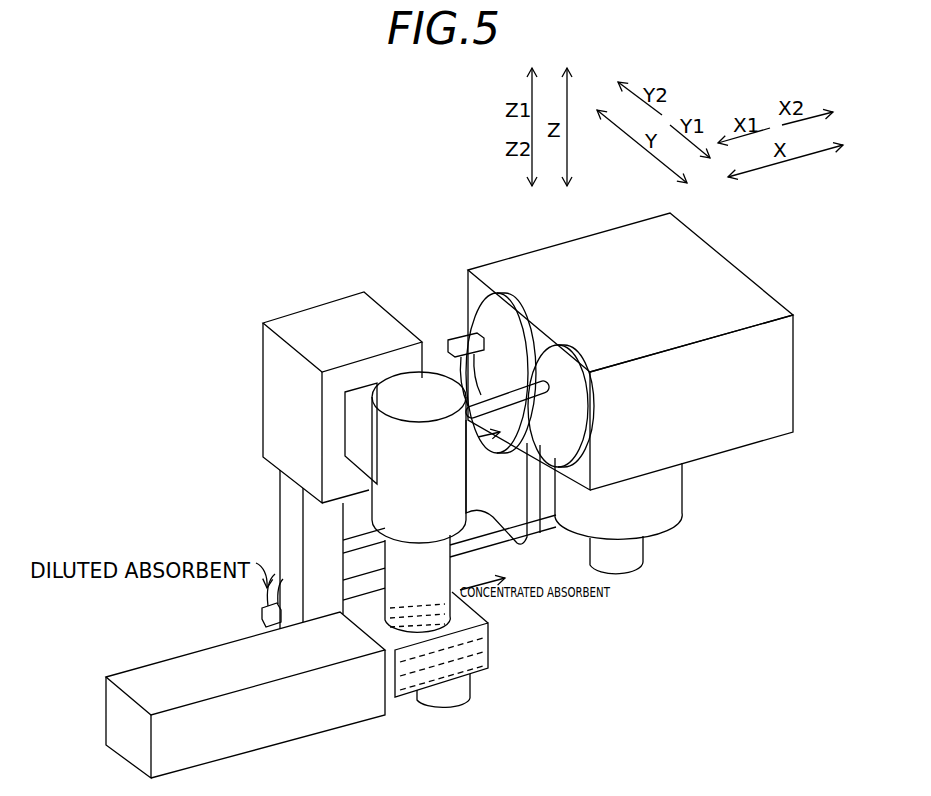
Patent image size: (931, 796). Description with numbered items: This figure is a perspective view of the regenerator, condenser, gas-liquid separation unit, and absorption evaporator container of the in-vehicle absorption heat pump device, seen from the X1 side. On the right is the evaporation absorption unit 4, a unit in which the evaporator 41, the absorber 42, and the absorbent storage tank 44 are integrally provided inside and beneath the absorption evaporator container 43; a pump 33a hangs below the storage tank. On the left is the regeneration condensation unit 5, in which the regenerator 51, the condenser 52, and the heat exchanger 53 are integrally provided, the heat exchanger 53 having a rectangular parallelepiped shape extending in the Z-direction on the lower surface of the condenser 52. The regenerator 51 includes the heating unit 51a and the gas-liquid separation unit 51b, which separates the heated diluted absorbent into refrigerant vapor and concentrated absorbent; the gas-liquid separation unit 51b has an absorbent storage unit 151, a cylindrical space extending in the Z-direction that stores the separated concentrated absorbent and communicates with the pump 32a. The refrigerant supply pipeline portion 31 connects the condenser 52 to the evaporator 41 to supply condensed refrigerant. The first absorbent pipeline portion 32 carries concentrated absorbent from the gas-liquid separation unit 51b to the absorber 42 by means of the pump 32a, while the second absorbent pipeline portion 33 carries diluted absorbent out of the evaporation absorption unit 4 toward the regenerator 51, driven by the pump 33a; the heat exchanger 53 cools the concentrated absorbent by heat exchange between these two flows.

The evaporation absorption unit 4 is at (754, 262).
The evaporator 41 is at (553, 357).
The absorber 42 is at (490, 312).
The absorption evaporator container 43 is at (796, 391).
The absorbent storage tank 44 is at (683, 498).
The regeneration condensation unit 5 is at (266, 300).
The condenser 52 is at (270, 389).
The heat exchanger 53 is at (282, 526).
The refrigerant supply pipeline portion 31 is at (467, 431).
The first absorbent pipeline portion 32 is at (512, 550).
The pump 32a is at (452, 708).
The second absorbent pipeline portion 33 is at (262, 590).
The pump 33a is at (629, 577).
The regenerator 51 is at (506, 670).
The heating unit 51a is at (150, 673).
The gas-liquid separation unit 51b is at (470, 487).
The absorbent storage unit 151 is at (483, 605).